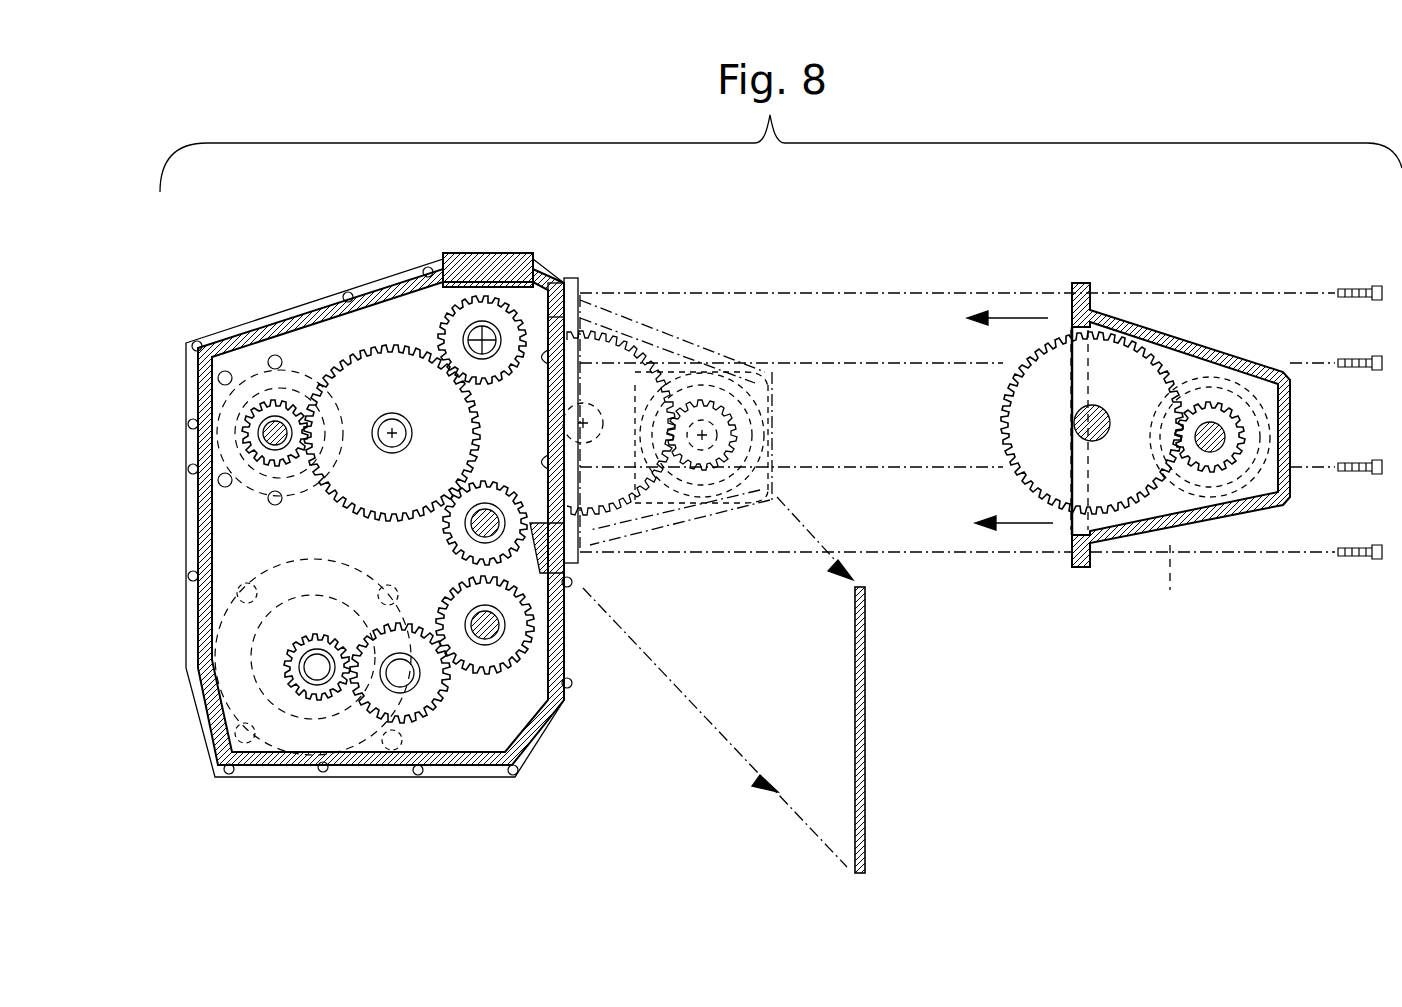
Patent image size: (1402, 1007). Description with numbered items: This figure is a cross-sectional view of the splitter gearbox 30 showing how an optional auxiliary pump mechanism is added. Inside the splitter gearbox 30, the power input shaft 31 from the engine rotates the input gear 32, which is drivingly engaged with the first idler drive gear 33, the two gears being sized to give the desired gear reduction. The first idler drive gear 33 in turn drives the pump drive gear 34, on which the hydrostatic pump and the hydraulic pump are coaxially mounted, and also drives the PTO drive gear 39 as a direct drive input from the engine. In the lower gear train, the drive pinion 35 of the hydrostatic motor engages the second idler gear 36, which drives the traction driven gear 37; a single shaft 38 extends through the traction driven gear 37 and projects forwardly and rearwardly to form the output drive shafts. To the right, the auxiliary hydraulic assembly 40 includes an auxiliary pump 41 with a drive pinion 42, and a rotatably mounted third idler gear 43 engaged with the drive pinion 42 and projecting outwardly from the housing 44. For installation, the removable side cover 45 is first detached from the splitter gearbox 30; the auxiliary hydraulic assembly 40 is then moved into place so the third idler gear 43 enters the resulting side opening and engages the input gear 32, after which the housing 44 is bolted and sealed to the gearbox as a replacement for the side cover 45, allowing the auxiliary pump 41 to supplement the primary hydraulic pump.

The splitter gearbox 30 is at (555, 735).
The power input shaft 31 is at (487, 347).
The input gear 32 is at (497, 256).
The first idler drive gear 33 is at (387, 340).
The pump drive gear 34 is at (263, 405).
The drive pinion 35 is at (286, 679).
The second idler gear 36 is at (380, 738).
The traction driven gear 37 is at (490, 673).
The single shaft 38 is at (503, 627).
The PTO drive gear 39 is at (446, 530).
The auxiliary hydraulic assembly 40 is at (712, 335).
The auxiliary pump 41 is at (1165, 545).
The drive pinion 42 is at (1243, 430).
The third idler gear 43 is at (653, 340).
The housing 44 is at (1288, 500).
The removable side cover 45 is at (865, 680).